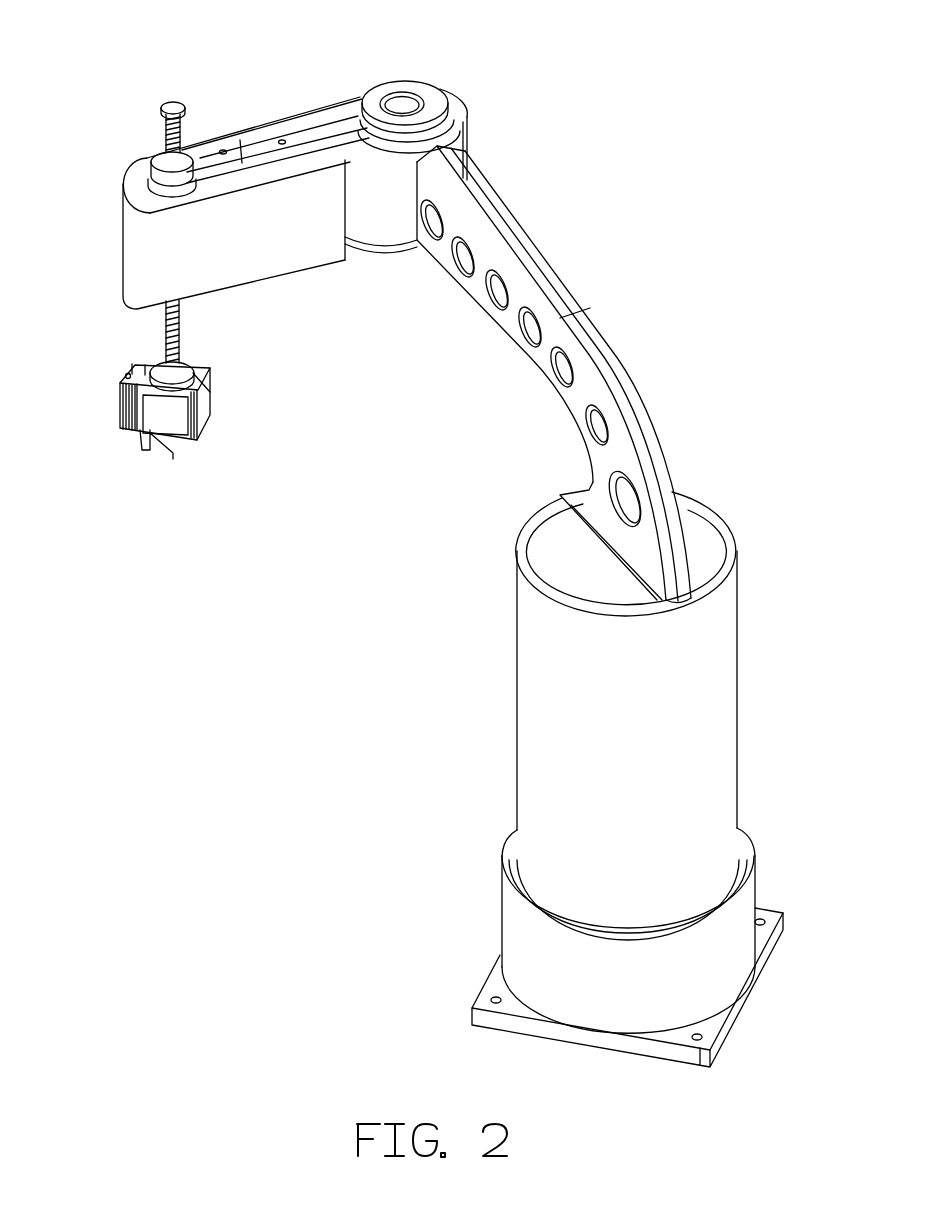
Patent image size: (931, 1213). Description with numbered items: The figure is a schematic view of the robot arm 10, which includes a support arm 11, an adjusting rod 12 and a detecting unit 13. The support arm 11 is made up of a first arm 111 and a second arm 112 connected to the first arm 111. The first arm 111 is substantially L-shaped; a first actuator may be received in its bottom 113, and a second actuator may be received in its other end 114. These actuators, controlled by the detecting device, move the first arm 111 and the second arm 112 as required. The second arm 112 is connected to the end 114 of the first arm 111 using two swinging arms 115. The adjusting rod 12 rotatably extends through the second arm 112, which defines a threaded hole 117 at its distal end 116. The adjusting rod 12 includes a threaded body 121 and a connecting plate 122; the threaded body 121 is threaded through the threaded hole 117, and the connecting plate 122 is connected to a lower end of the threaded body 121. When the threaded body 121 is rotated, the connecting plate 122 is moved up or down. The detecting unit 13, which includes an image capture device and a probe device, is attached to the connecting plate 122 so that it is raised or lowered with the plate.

The robot arm 10 is at (156, 54).
The support arm 11 is at (624, 192).
The first arm 111 is at (538, 290).
The second arm 112 is at (300, 220).
The bottom 113 is at (707, 973).
The end 114 is at (458, 155).
The swinging arms 115 is at (335, 124).
The end 116 is at (140, 247).
The threaded hole 117 is at (155, 162).
The adjusting rod 12 is at (296, 330).
The threaded body 121 is at (182, 336).
The connecting plate 122 is at (210, 392).
The detecting unit 13 is at (113, 444).